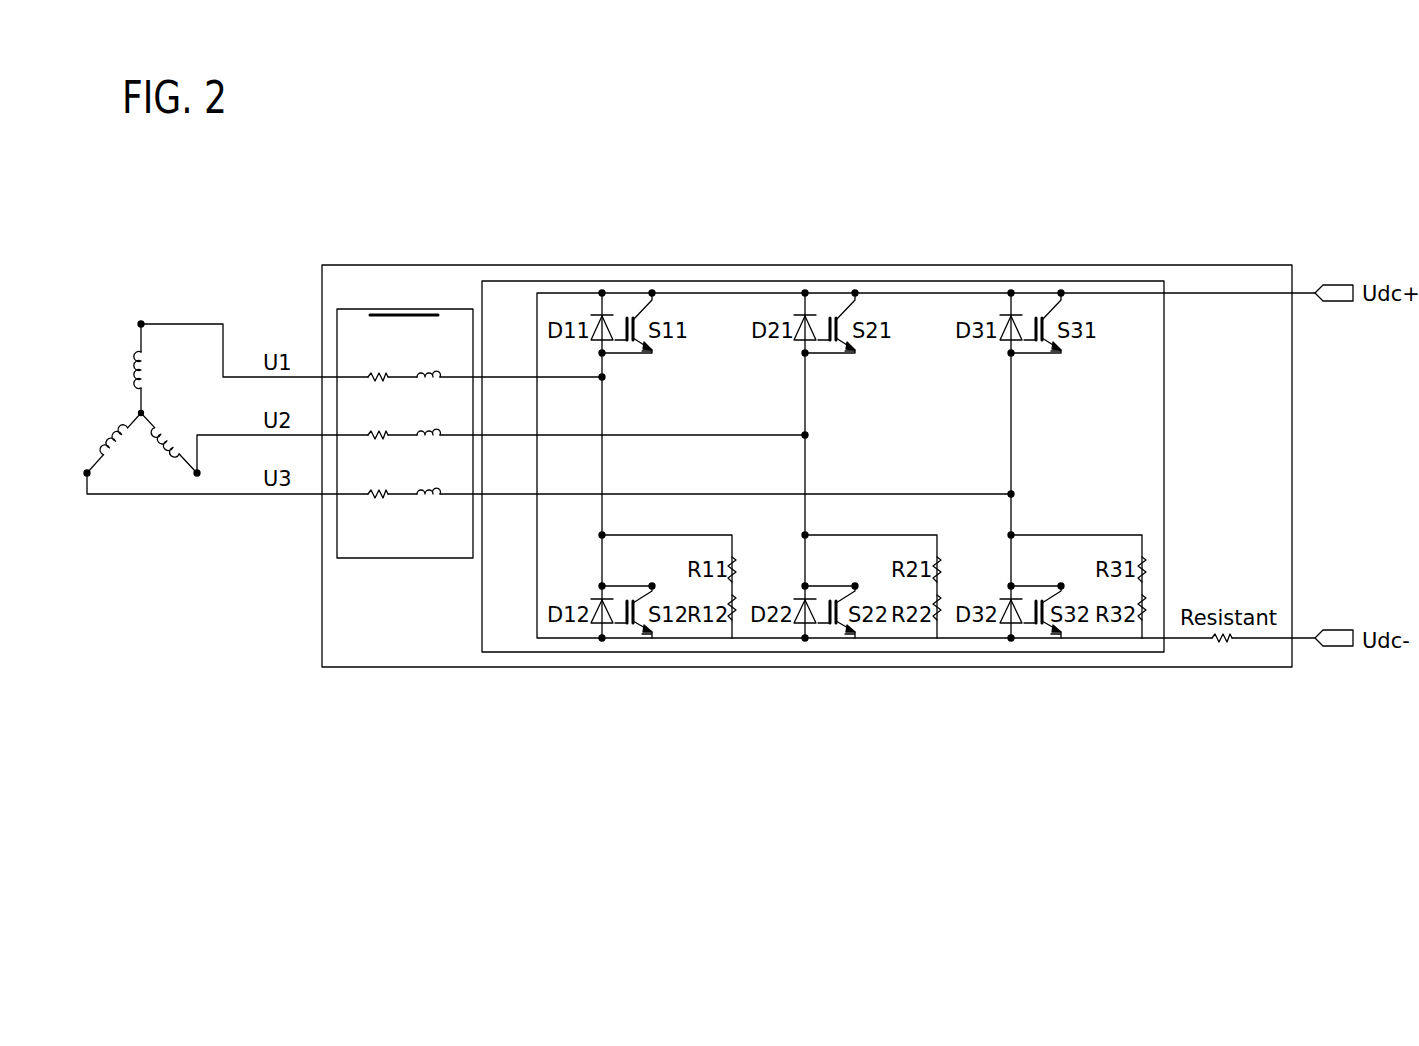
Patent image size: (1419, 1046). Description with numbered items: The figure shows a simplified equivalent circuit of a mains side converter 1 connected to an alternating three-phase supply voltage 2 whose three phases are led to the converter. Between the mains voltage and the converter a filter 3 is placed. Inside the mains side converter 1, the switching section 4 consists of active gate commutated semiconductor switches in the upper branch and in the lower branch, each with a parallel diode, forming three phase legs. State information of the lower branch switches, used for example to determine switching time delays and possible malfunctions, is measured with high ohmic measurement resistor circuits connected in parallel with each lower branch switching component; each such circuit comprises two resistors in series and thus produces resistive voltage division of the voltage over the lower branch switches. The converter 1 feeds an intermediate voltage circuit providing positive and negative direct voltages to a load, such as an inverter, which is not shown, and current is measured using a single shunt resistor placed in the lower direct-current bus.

The mains side converter 1 is at (760, 266).
The alternating supply voltage 2 is at (240, 275).
The filter 3 is at (403, 314).
The switching unit with semiconductor switches 4 is at (1113, 282).